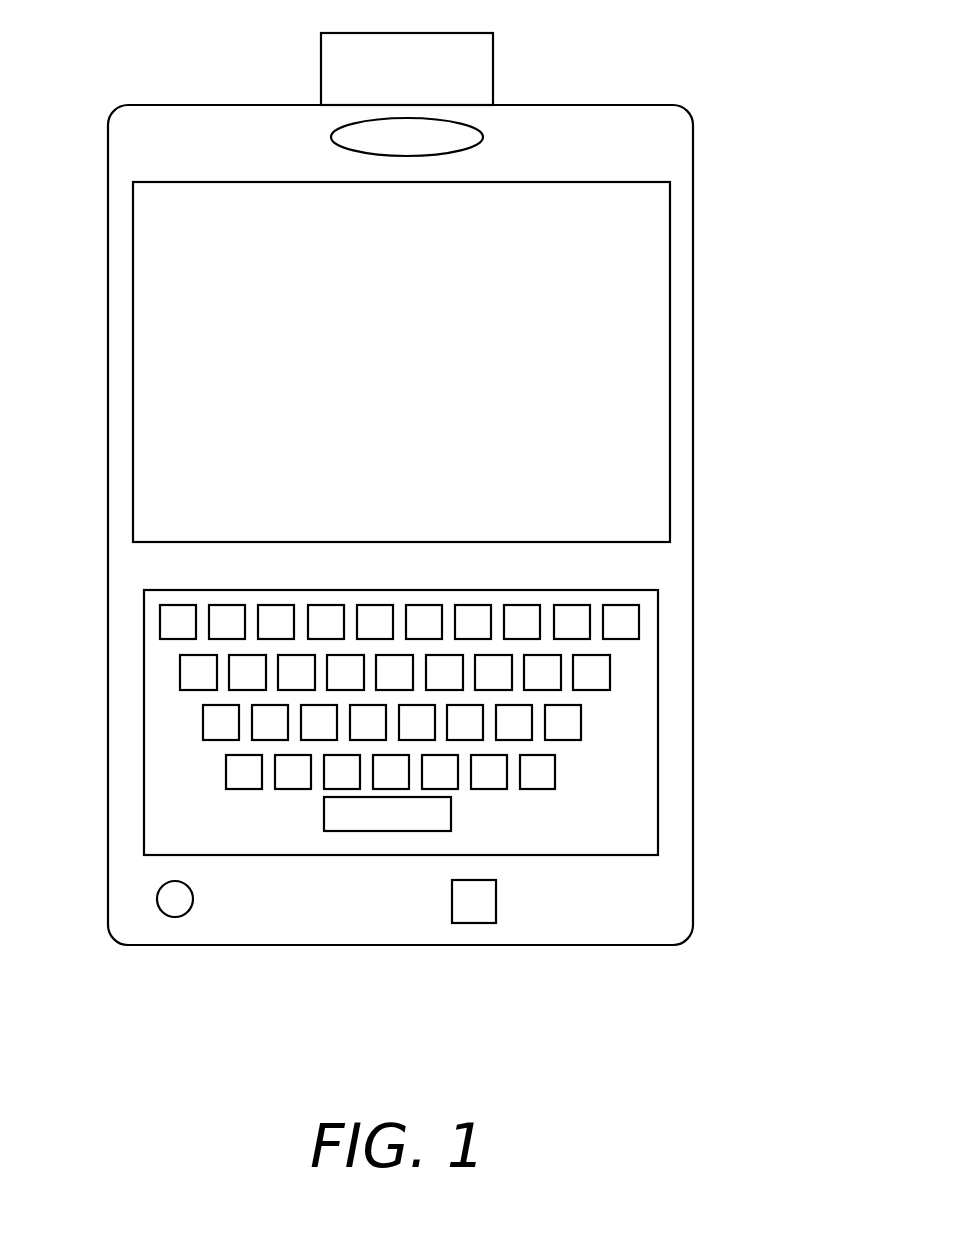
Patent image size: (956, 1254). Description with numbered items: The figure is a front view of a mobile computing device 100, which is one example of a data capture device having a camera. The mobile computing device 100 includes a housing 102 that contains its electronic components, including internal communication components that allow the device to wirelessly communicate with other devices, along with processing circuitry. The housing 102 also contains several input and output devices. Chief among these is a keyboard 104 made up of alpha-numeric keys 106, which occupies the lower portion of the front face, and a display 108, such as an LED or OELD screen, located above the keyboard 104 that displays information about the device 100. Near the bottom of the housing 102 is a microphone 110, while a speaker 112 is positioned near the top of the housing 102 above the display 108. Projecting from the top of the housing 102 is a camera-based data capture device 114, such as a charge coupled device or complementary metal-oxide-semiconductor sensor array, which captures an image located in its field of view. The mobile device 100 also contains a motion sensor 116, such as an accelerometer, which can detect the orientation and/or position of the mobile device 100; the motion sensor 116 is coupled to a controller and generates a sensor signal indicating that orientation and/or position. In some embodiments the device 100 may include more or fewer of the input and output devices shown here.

The mobile computing device 100 is at (183, 58).
The housing 102 is at (694, 306).
The keyboard 104 is at (462, 722).
The alpha-numeric keys 106 is at (555, 772).
The display 108 is at (418, 384).
The microphone 110 is at (190, 908).
The speaker 112 is at (458, 151).
The camera-based data capture device 114 is at (493, 80).
The motion sensor 116 is at (496, 908).